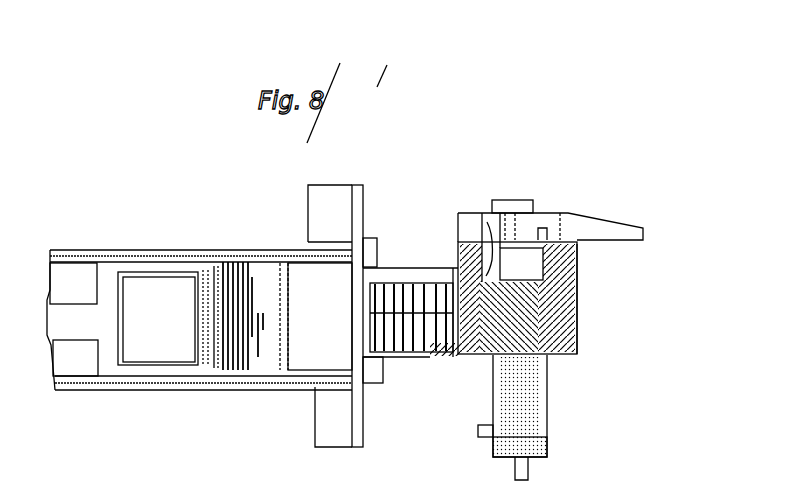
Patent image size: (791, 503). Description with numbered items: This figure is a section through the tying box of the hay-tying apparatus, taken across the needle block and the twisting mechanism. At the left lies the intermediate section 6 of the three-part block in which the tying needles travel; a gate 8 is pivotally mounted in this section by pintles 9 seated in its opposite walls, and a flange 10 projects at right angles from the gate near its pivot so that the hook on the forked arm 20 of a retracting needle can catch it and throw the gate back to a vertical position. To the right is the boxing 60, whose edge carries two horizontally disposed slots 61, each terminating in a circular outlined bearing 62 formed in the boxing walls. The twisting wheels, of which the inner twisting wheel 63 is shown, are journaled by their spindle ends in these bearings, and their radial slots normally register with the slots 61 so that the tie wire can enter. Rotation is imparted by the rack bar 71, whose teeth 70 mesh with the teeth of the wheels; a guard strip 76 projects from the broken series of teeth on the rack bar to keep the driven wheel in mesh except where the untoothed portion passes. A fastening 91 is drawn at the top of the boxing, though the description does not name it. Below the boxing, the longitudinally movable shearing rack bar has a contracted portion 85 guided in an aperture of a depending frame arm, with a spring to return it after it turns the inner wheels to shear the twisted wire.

The intermediate section 6 is at (141, 250).
The gate 8 is at (342, 313).
The pintle 9 is at (248, 267).
The flange 10 is at (58, 317).
The arm 20 is at (152, 388).
The boxing 60 is at (562, 361).
The slot 61 is at (398, 362).
The bearing 62 is at (437, 362).
The twisting wheel 63 is at (405, 282).
The teeth 70 is at (588, 225).
The rack bar 71 is at (577, 322).
The guard strip 76 is at (577, 267).
The contracted portion 85 is at (478, 240).
The bolt 91 is at (528, 197).